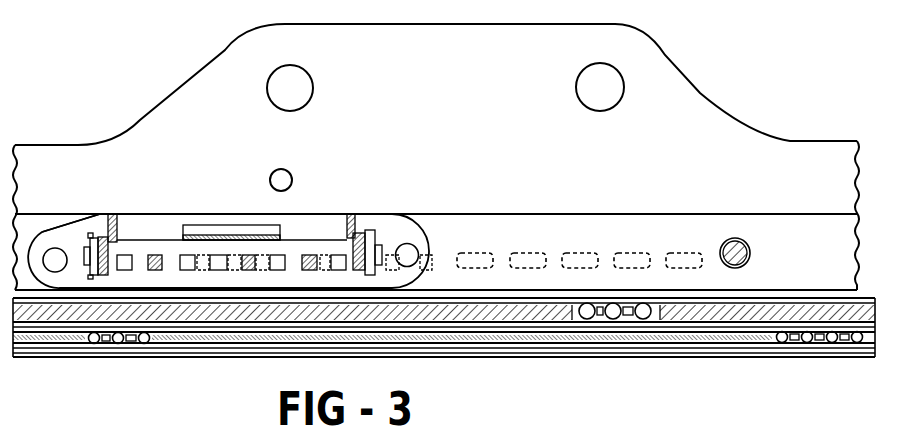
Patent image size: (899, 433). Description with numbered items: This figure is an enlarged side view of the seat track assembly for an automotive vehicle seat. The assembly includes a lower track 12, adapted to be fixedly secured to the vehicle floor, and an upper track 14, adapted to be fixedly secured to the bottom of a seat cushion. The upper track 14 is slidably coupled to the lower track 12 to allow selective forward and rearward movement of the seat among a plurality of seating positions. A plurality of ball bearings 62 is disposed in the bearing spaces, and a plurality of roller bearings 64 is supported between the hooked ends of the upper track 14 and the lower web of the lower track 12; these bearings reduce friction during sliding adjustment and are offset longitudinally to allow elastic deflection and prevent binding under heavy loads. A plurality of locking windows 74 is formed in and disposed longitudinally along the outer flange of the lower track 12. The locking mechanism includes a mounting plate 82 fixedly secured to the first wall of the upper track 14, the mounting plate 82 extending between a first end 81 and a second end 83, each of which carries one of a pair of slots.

The lower track 12 is at (707, 357).
The upper track 14 is at (217, 97).
The ball bearings 62 is at (587, 320).
The roller bearings 64 is at (91, 350).
The locking windows 74 is at (528, 253).
The first end 81 is at (408, 233).
The mounting plate 82 is at (47, 231).
The second end 83 is at (70, 227).